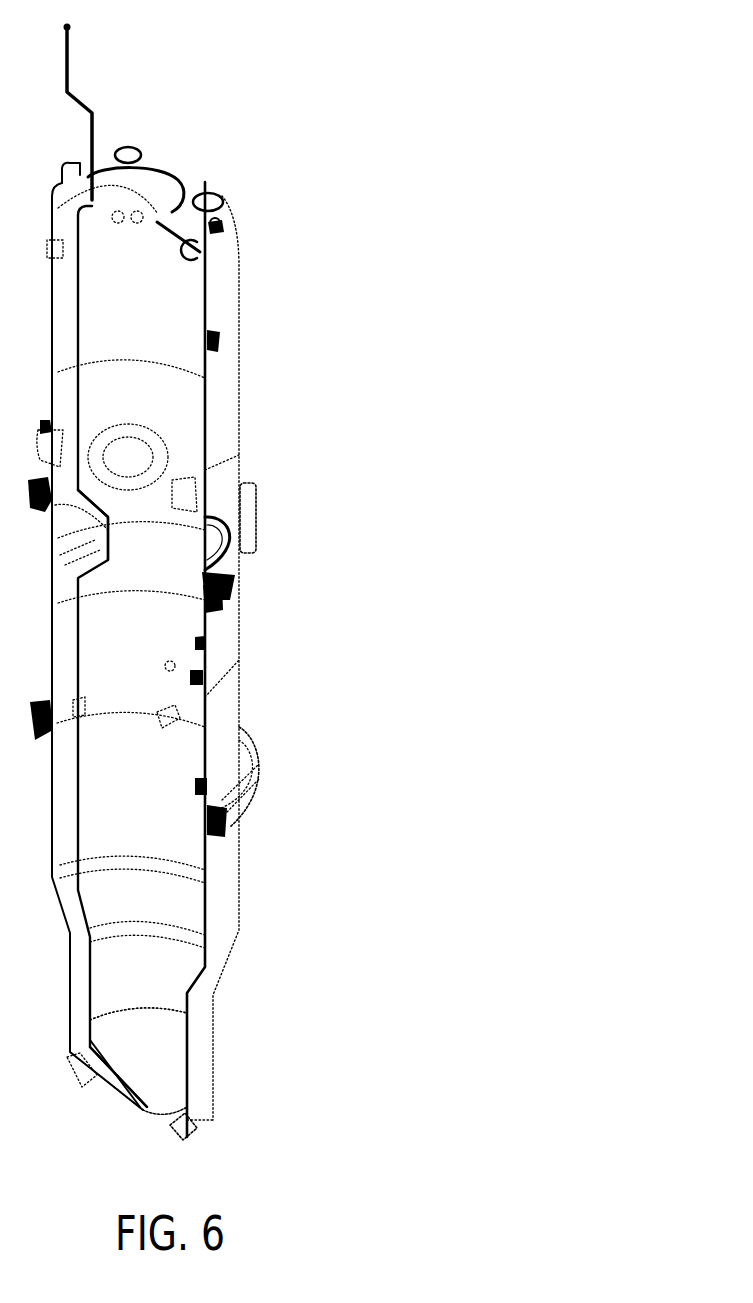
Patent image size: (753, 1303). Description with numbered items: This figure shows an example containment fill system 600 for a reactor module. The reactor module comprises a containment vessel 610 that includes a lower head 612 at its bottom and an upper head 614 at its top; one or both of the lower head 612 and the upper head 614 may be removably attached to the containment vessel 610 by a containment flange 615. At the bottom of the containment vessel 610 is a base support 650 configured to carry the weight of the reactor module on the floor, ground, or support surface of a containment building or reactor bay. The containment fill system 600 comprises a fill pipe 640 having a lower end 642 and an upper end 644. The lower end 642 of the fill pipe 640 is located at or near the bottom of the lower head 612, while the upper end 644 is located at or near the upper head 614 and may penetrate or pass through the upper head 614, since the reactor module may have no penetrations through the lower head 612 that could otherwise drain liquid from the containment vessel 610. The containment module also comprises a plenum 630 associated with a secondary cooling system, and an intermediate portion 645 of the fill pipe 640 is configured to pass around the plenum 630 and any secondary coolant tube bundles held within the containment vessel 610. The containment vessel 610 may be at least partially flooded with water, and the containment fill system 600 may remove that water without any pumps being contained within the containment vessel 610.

The containment fill system 600 is at (306, 79).
The containment vessel 610 is at (240, 337).
The lower head 612 is at (148, 1108).
The upper head 614 is at (180, 175).
The containment flange 615 is at (263, 780).
The plenum 630 is at (253, 482).
The fill pipe 640 is at (82, 660).
The lower end 642 is at (112, 1072).
The upper end 644 is at (70, 60).
The intermediate portion 645 is at (108, 533).
The base support 650 is at (217, 1120).